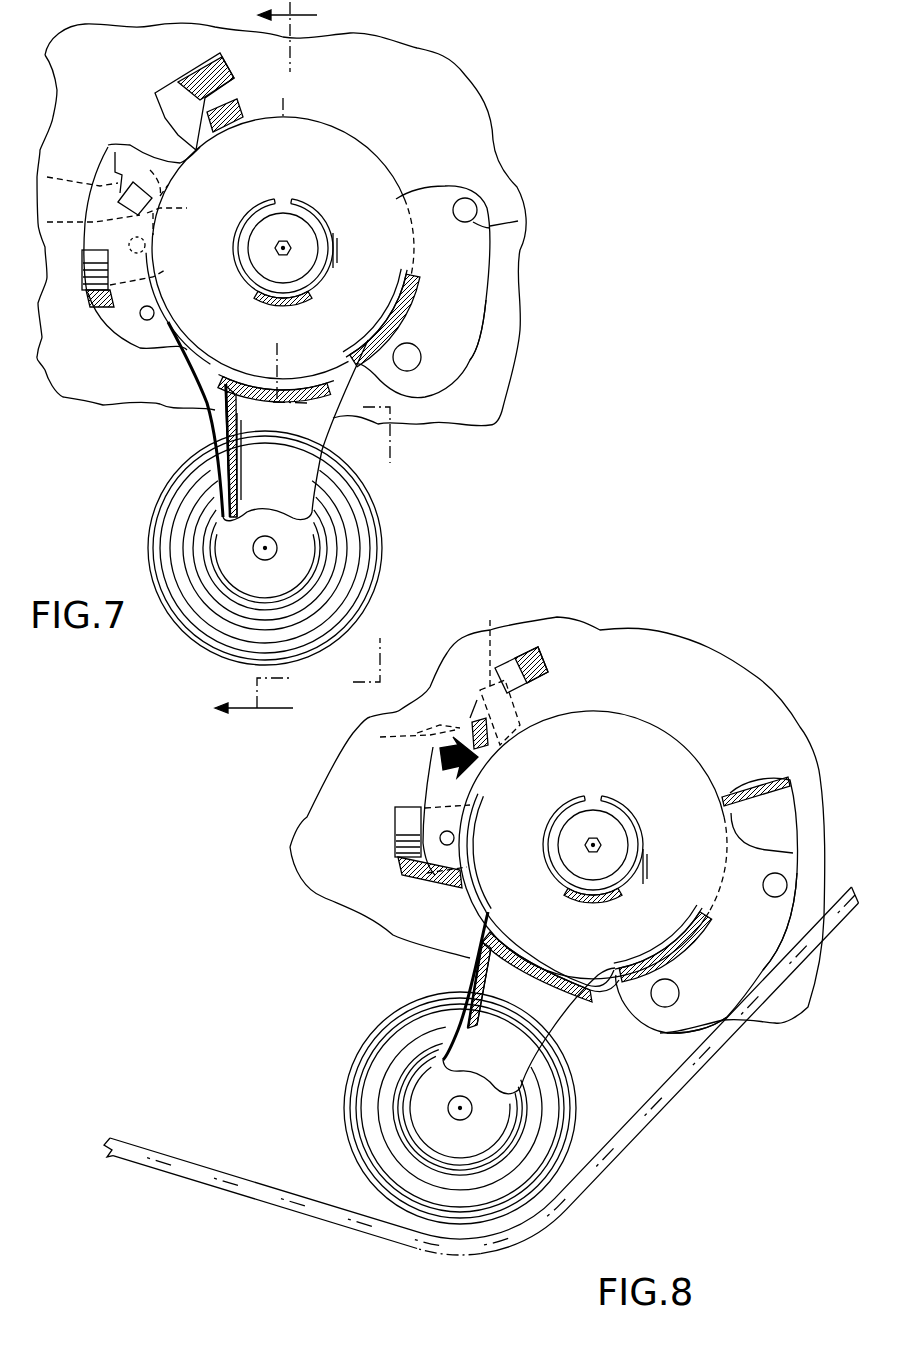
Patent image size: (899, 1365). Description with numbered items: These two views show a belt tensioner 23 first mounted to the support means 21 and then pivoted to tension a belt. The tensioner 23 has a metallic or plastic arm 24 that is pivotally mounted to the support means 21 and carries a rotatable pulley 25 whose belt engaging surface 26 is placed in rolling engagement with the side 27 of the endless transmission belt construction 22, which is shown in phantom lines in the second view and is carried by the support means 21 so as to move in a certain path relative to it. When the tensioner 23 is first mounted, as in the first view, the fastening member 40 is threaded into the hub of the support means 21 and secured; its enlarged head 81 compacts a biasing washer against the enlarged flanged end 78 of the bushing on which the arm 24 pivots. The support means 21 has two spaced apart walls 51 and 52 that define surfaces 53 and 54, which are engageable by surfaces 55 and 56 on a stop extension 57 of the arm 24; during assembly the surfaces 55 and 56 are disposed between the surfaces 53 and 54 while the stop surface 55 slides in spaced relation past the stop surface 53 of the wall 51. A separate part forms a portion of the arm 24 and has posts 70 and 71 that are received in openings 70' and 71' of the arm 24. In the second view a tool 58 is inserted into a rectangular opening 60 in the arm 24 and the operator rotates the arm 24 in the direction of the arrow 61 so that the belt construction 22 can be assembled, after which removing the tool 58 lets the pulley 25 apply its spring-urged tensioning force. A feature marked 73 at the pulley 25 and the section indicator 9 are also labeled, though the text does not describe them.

In FIG. 7, the section line 9- 9 is at (302, 365).
In FIG. 7, the support means 21 is at (447, 72).
In FIG. 8, the support means 21 is at (673, 643).
In FIG. 8, the endless transmission belt construction 22 is at (652, 1118).
In FIG. 7, the belt tensioner 23 is at (373, 153).
In FIG. 8, the belt tensioner 23 is at (667, 732).
In FIG. 7, the arm 24 is at (233, 430).
In FIG. 8, the arm 24 is at (490, 973).
In FIG. 7, the rotatable pulley 25 is at (147, 545).
In FIG. 8, the rotatable pulley 25 is at (360, 1080).
In FIG. 7, the belt engaging surface 26 is at (162, 505).
In FIG. 8, the belt engaging surface 26 is at (368, 1044).
In FIG. 8, the side of the belt construction 27 is at (655, 1082).
In FIG. 7, the fastening member 40 is at (300, 233).
In FIG. 8, the fastening member 40 is at (617, 860).
In FIG. 7, the wall 51 is at (82, 253).
In FIG. 8, the wall 51 is at (400, 830).
In FIG. 7, the wall 52 is at (173, 90).
In FIG. 8, the wall 52 is at (523, 660).
In FIG. 7, the surface 53 is at (184, 210).
In FIG. 8, the surface 53 is at (417, 807).
In FIG. 7, the surface 54 is at (167, 115).
In FIG. 8, the surface 54 is at (500, 753).
In FIG. 7, the surface 55 is at (45, 222).
In FIG. 8, the surface 55 is at (380, 737).
In FIG. 7, the surface 56 is at (100, 135).
In FIG. 8, the surface 56 is at (491, 644).
In FIG. 7, the stop extension 57 is at (47, 177).
In FIG. 8, the stop extension 57 is at (422, 733).
In FIG. 8, the tool 58 is at (473, 717).
In FIG. 7, the rectangular opening 60 is at (140, 183).
In FIG. 8, the rectangular opening 60 is at (487, 757).
In FIG. 8, the arrow 61 is at (443, 753).
In FIG. 7, the post 70 is at (423, 405).
In FIG. 8, the post 70 is at (642, 1019).
In FIG. 7, the opening 70' is at (492, 347).
In FIG. 8, the opening 70' is at (703, 1000).
In FIG. 7, the post 71 is at (502, 189).
In FIG. 8, the post 71 is at (766, 853).
In FIG. 7, the opening 71' is at (528, 213).
In FIG. 8, the opening 71' is at (768, 921).
In FIG. 7, the pulley bearing 73 is at (250, 583).
In FIG. 8, the pulley bearing 73 is at (427, 1135).
In FIG. 7, the enlarged flanged end 78 is at (240, 282).
In FIG. 8, the enlarged flanged end 78 is at (632, 820).
In FIG. 7, the enlarged head 81 is at (307, 268).